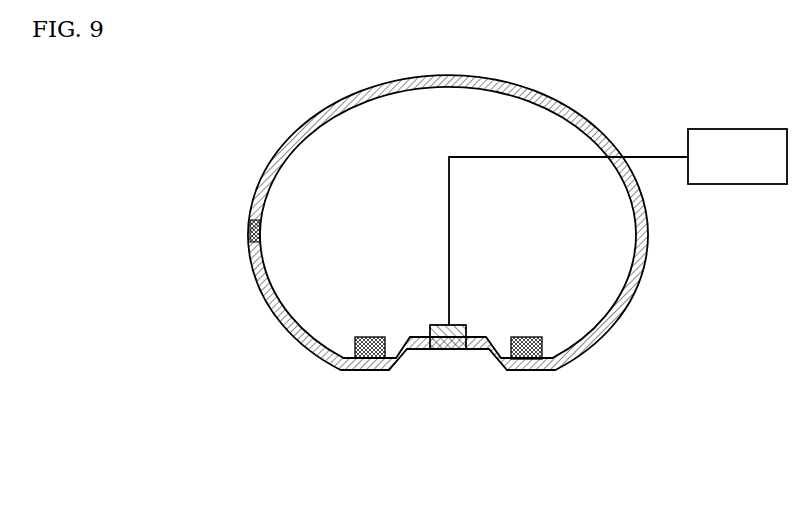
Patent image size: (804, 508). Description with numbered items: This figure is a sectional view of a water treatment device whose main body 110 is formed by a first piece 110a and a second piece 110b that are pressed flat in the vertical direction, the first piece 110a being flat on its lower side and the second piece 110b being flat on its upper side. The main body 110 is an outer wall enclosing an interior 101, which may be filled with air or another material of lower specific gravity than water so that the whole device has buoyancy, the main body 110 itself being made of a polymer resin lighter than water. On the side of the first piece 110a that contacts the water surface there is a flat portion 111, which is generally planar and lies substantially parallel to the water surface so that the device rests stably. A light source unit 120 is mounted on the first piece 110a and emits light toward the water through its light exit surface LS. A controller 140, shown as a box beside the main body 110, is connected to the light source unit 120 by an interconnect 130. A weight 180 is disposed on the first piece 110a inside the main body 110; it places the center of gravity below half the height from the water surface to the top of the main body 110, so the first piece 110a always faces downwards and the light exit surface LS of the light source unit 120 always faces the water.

The interior 101 is at (588, 303).
The main body 110 is at (120, 183).
The first piece 110a is at (258, 268).
The second piece 110b is at (256, 190).
The flat portion 111 is at (375, 371).
The light source unit 120 is at (445, 350).
The light exit surface LS is at (463, 350).
The interconnect 130 is at (572, 155).
The controller 140 is at (768, 129).
The weight 180 is at (518, 360).